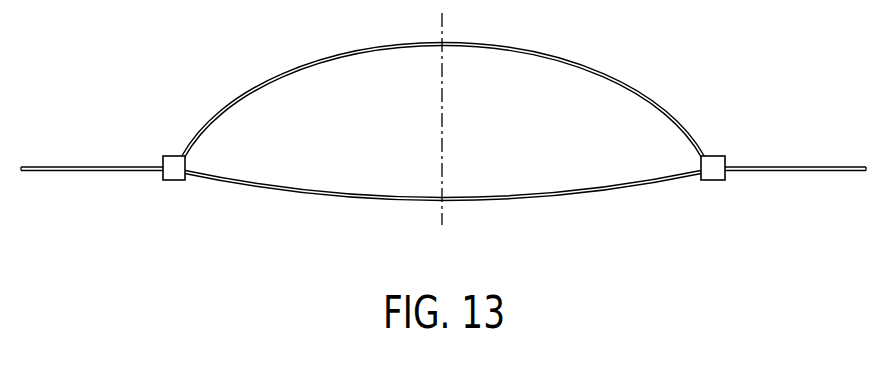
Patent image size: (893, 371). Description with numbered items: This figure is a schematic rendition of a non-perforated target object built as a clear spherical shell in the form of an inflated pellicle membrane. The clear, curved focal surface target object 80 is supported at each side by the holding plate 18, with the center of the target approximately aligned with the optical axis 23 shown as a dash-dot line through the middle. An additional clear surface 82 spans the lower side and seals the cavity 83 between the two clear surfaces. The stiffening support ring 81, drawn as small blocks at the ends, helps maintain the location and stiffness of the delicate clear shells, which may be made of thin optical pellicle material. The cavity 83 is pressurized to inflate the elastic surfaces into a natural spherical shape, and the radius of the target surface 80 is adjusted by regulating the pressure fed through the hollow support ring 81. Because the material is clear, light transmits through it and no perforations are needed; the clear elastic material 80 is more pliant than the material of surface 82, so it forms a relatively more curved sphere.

The holding plate 18 is at (130, 165).
The optical axis 23 is at (444, 139).
The target object 80 is at (305, 67).
The stiffening support ring 81 is at (174, 181).
The clear surface 82 is at (305, 191).
The cavity 83 is at (565, 165).